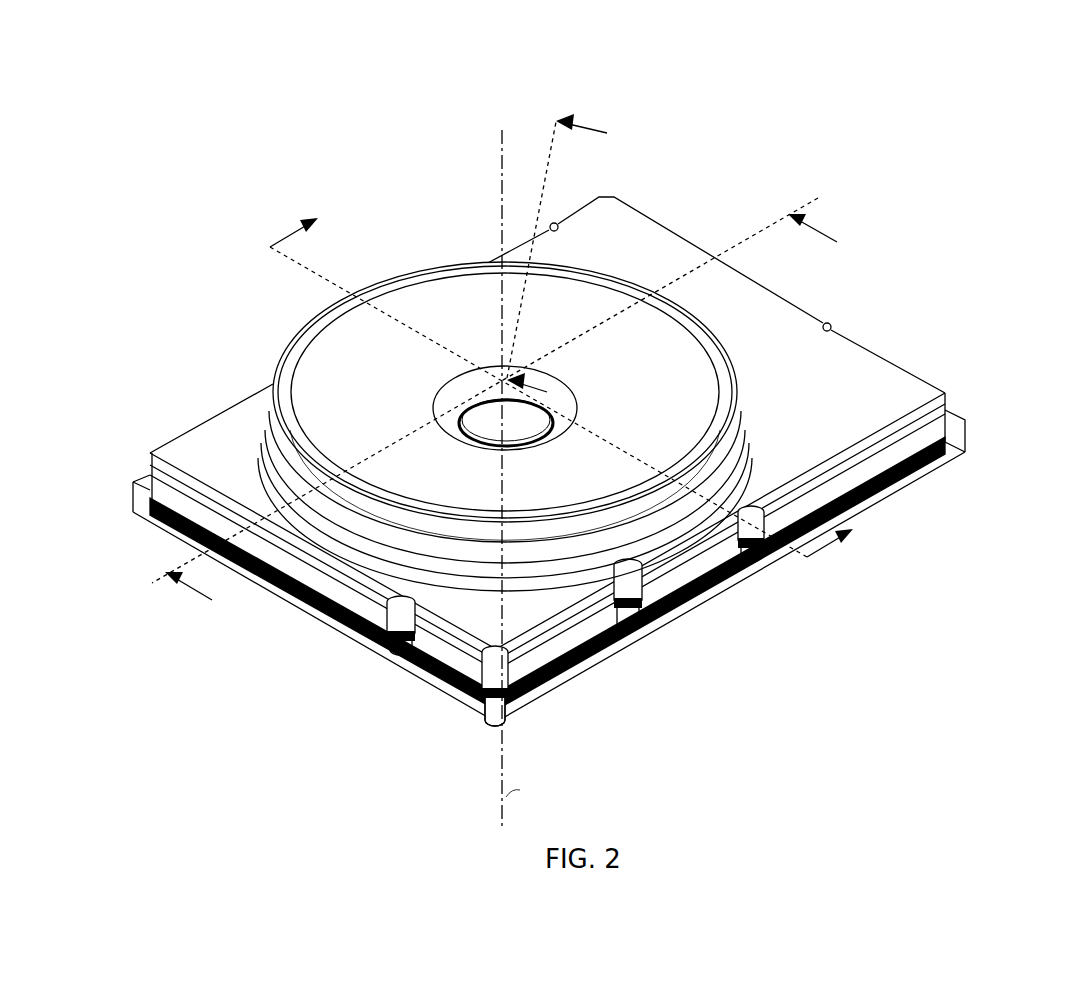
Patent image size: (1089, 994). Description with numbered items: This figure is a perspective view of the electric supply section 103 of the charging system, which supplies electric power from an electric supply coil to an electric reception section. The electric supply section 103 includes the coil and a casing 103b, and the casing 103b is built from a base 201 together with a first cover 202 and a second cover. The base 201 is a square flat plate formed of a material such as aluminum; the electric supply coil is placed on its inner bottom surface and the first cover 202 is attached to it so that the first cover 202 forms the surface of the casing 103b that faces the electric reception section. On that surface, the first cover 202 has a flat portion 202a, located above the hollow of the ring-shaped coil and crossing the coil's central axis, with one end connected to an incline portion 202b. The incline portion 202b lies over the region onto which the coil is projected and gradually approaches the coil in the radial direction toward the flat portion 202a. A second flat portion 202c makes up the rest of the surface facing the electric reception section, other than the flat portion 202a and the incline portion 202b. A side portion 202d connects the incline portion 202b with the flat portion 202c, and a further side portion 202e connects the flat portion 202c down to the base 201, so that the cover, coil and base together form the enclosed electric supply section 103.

The electric supply section 103 is at (414, 100).
The casing 103b is at (898, 333).
The base 201 is at (928, 468).
The first cover 202 is at (526, 490).
The flat portion 202a is at (487, 424).
The incline portion 202b is at (408, 300).
The flat portion 202c is at (778, 405).
The side portion 202d is at (506, 560).
The side portion 202e is at (700, 570).